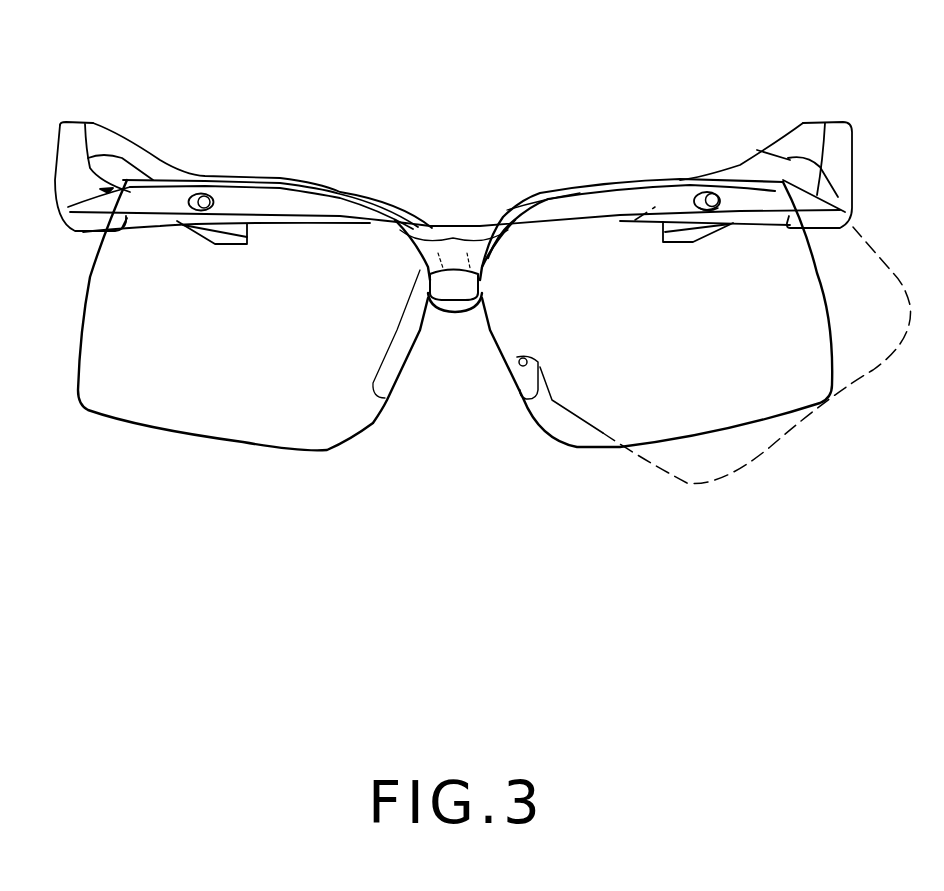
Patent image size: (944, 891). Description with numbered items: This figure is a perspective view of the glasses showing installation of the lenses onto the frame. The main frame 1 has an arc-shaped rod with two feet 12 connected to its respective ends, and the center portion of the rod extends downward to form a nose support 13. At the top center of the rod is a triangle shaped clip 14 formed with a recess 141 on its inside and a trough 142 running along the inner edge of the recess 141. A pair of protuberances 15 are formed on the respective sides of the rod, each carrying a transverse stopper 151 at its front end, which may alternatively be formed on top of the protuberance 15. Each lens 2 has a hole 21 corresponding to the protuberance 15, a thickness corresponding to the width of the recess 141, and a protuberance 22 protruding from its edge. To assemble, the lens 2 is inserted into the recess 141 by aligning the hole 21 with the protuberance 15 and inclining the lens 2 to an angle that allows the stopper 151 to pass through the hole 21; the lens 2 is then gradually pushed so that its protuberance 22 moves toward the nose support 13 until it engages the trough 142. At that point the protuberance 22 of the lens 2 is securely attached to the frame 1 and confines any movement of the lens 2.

The main frame 1 is at (868, 36).
The feet 12 is at (838, 133).
The nose support 13 is at (393, 362).
The triangle shaped clip 14 is at (453, 243).
The recess 141 is at (503, 217).
The trough 142 is at (478, 230).
The protuberance 15 is at (708, 193).
The transverse stopper 151 is at (693, 210).
The lens 2 is at (252, 432).
The hole 21 is at (709, 204).
The protuberance 22 is at (635, 220).